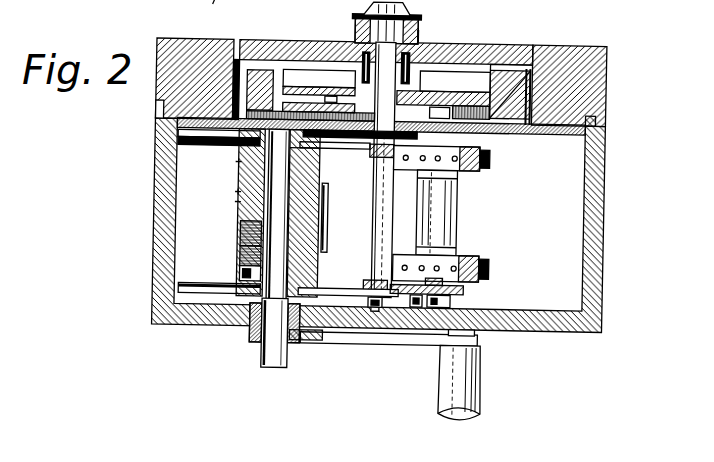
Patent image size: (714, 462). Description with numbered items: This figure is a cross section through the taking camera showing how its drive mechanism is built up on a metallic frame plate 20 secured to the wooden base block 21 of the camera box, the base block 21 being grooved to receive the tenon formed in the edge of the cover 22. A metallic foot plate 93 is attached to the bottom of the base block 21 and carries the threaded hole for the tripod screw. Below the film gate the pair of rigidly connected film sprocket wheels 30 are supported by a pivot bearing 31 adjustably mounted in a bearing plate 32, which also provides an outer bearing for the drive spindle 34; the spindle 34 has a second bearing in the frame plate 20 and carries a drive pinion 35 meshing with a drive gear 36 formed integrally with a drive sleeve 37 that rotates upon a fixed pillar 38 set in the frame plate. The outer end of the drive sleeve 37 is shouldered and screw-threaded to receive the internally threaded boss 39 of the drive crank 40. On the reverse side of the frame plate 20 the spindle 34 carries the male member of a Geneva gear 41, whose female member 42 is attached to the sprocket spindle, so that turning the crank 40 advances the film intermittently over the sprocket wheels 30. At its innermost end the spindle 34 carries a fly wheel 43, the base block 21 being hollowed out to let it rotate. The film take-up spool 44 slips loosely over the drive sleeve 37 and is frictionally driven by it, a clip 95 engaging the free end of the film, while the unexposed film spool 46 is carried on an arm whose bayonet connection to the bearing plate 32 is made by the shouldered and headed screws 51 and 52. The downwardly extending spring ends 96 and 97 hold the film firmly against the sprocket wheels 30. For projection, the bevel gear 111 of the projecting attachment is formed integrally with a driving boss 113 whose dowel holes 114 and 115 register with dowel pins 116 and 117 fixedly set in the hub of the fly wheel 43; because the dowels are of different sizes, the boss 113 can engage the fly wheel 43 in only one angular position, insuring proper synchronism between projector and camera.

The frame plate 20 is at (545, 125).
The base block 21 is at (594, 85).
The cover 22 is at (605, 280).
The film sprocket wheels 30 is at (470, 167).
The pivot bearing 31 is at (455, 296).
The bearing plate 32 is at (478, 284).
The drive spindle 34 is at (387, 231).
The drive pinion 35 is at (349, 153).
The drive gear 36 is at (182, 141).
The drive sleeve 37 is at (267, 233).
The fixed pillar 38 is at (242, 221).
The boss of the drive crank 39 is at (256, 330).
The drive crank 40 is at (418, 337).
The Geneva gear male member 41 is at (467, 106).
The Geneva gear female member 42 is at (504, 86).
The fly wheel 43 is at (540, 49).
The film take-up spool 44 is at (322, 267).
The unexposed film spool 46 is at (255, 263).
The shouldered and headed screw 51 is at (378, 299).
The shouldered and headed screw 52 is at (383, 303).
The foot plate 93 is at (222, 7).
The clip 95 is at (330, 204).
The downwardly extending spring end 96 is at (494, 261).
The downwardly extending spring end 97 is at (492, 156).
The bevel gear 111 is at (420, 7).
The driving boss 113 is at (356, 12).
The dowel hole 114 is at (357, 26).
The dowel hole 115 is at (418, 33).
The dowel pin 116 is at (356, 69).
The dowel pin 117 is at (386, 65).